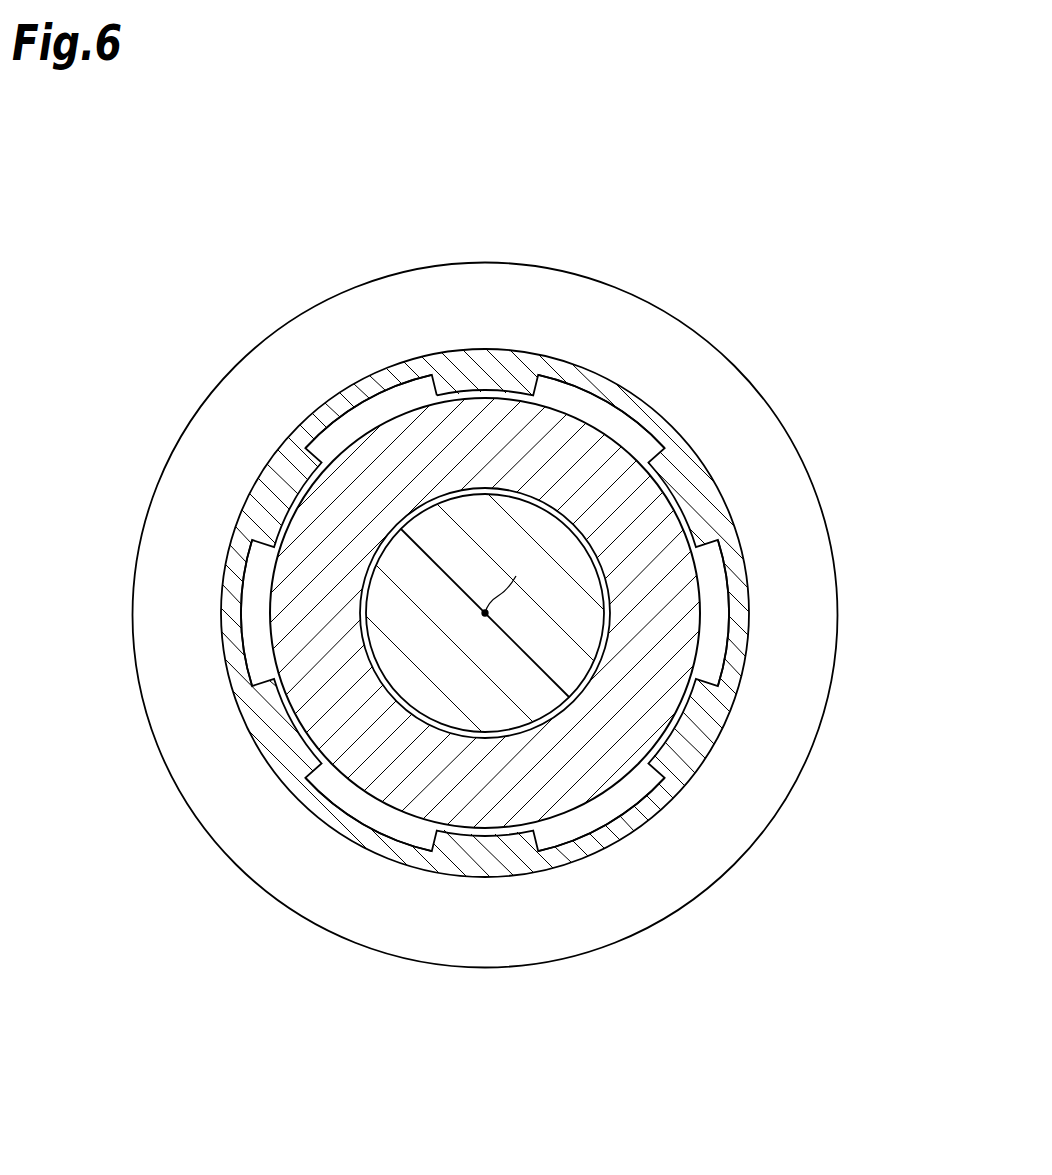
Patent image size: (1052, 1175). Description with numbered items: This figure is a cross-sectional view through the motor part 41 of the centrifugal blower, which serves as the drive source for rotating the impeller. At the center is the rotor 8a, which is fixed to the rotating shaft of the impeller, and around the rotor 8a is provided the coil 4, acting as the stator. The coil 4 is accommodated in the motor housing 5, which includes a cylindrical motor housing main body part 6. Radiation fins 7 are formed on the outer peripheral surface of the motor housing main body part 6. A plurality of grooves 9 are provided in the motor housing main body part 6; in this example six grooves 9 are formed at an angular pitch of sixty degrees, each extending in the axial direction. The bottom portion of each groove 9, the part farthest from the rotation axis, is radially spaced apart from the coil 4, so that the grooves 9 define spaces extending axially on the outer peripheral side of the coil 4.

The motor part 41 is at (697, 216).
The motor housing 5 is at (897, 565).
The motor housing main body part 6 is at (743, 592).
The radiation fins 7 is at (805, 627).
The groove 9 is at (369, 418).
The coil 4 is at (650, 718).
The rotor 8a is at (535, 695).